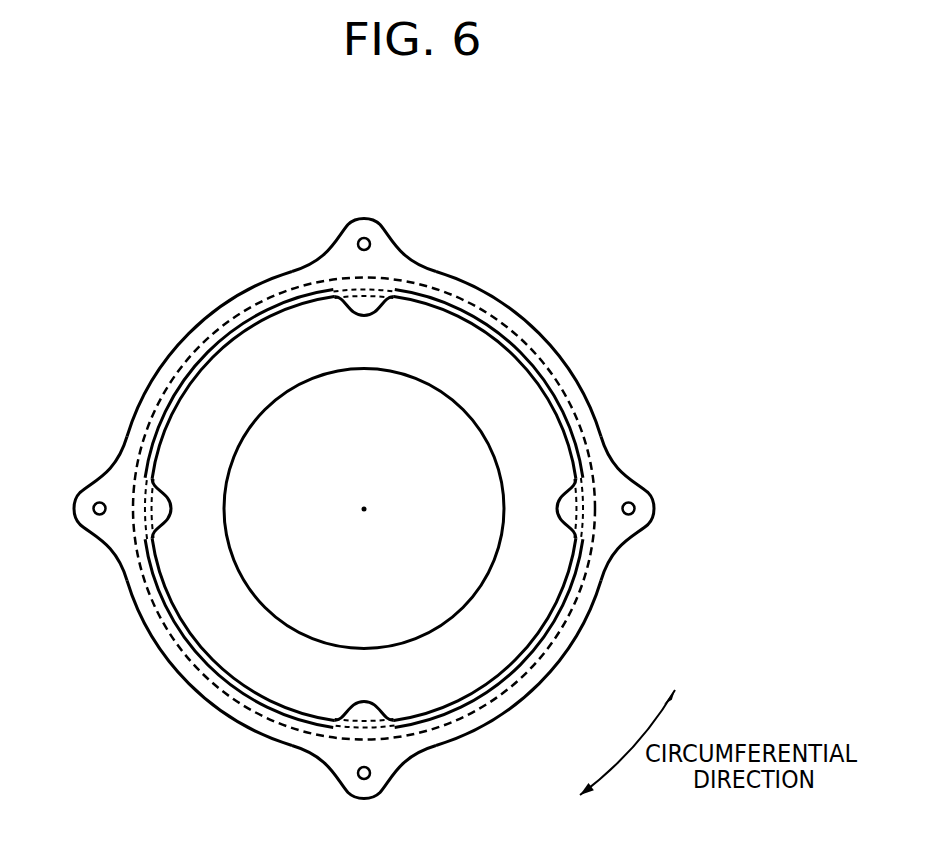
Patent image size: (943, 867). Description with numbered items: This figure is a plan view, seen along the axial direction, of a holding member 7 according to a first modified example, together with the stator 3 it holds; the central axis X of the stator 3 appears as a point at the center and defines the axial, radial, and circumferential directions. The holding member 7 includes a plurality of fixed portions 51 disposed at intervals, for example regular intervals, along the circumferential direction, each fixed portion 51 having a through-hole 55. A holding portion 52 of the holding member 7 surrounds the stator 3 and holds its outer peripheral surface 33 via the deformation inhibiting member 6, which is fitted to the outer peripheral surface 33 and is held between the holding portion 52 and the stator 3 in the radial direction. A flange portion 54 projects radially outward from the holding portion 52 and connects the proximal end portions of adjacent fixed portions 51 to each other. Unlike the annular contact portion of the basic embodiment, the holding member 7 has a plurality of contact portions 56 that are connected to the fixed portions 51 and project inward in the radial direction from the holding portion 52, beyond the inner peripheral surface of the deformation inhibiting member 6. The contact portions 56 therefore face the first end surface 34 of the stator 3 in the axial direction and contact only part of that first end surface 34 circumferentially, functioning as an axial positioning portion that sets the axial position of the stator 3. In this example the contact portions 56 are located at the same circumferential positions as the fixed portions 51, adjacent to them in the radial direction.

The stator 3 is at (246, 350).
The deformation inhibiting member 6 is at (373, 484).
The holding member 7 is at (365, 496).
The outer peripheral surface 33 is at (177, 384).
The first end surface 34 is at (224, 382).
The fixed portion 51 is at (389, 236).
The holding portion 52 is at (250, 274).
The flange portion 54 is at (560, 356).
The through-hole 55 is at (362, 240).
The contact portion 56 is at (390, 302).
The central axis X is at (367, 511).